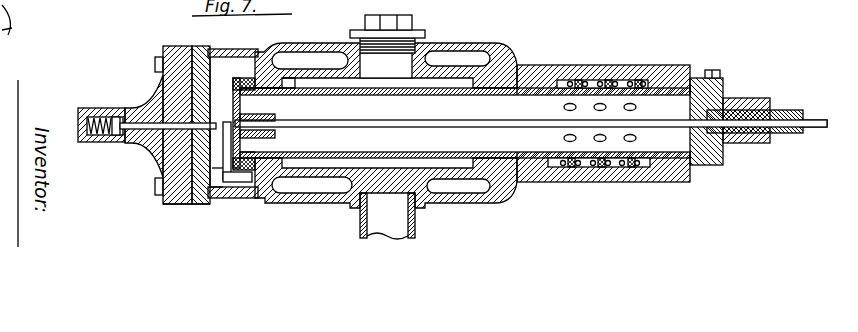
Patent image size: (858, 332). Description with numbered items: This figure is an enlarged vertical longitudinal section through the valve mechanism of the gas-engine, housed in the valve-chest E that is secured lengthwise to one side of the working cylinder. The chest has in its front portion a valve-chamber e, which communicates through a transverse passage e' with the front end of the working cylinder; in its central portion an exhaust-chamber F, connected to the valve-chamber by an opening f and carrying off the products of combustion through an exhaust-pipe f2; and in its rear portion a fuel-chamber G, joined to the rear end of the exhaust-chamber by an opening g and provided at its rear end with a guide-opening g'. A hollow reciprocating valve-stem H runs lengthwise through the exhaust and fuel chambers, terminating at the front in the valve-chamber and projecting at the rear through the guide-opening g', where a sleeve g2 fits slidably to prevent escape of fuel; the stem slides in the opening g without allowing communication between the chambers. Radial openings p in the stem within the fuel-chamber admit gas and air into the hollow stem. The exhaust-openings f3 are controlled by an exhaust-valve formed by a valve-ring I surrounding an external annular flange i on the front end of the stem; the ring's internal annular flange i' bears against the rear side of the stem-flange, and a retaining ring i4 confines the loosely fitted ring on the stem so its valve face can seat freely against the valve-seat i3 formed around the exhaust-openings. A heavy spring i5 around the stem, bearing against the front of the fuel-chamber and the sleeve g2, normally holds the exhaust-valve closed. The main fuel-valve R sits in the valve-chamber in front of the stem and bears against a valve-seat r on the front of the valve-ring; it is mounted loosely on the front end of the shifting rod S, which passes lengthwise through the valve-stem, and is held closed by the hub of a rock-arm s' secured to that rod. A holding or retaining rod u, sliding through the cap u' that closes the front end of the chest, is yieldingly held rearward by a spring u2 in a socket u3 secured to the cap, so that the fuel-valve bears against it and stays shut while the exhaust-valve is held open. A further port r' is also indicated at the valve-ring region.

The main fuel-valve R is at (172, 98).
The socket u3 is at (83, 108).
The spring u2 is at (94, 142).
The holding or retaining rod u is at (156, 146).
The rock-arm s' is at (147, 198).
The cap u' is at (179, 218).
The valve-chamber e is at (233, 123).
The valve-chest E is at (470, 27).
The exhaust-openings f3 is at (288, 82).
The exhaust-chamber F is at (397, 179).
The opening f is at (284, 182).
The exhaust-pipe f2 is at (387, 216).
The opening g is at (597, 140).
The hollow reciprocating valve-stem H is at (444, 114).
The valve-seat i3 is at (290, 91).
The heavy spring i5 is at (616, 82).
The fuel-chamber G is at (585, 168).
The radial openings p is at (566, 103).
The guide-opening g' is at (692, 141).
The sleeve g2 is at (694, 168).
The internal annular flange i' is at (767, 110).
The shifting rod S is at (374, 124).
The external annular flange i is at (254, 98).
The fastening or retaining ring i4 is at (241, 78).
The valve-ring I is at (247, 183).
The valve-seat r is at (217, 176).
The port r' is at (208, 212).
The transverse passage e' is at (170, 159).